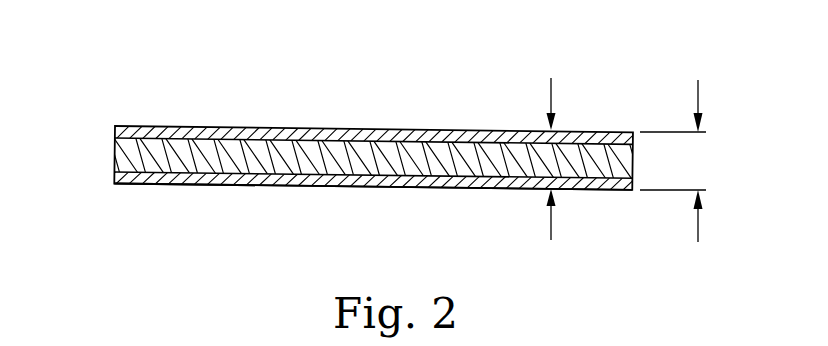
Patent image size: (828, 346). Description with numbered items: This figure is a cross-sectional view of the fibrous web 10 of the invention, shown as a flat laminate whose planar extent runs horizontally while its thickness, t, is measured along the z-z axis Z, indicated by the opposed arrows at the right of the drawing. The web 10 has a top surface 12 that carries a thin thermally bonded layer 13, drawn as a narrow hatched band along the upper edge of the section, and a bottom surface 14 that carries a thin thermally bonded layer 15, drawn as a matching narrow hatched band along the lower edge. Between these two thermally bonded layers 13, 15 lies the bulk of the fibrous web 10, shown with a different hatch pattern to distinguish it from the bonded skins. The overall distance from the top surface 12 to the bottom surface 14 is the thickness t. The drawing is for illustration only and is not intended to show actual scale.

The fibrous web 10 is at (117, 83).
The top surface 12 is at (178, 126).
The thin thermally bonded layer 13 is at (289, 131).
The bottom surface 14 is at (220, 185).
The thin thermally bonded layer 15 is at (317, 186).
The z-z axis Z is at (553, 158).
The thickness t is at (698, 93).